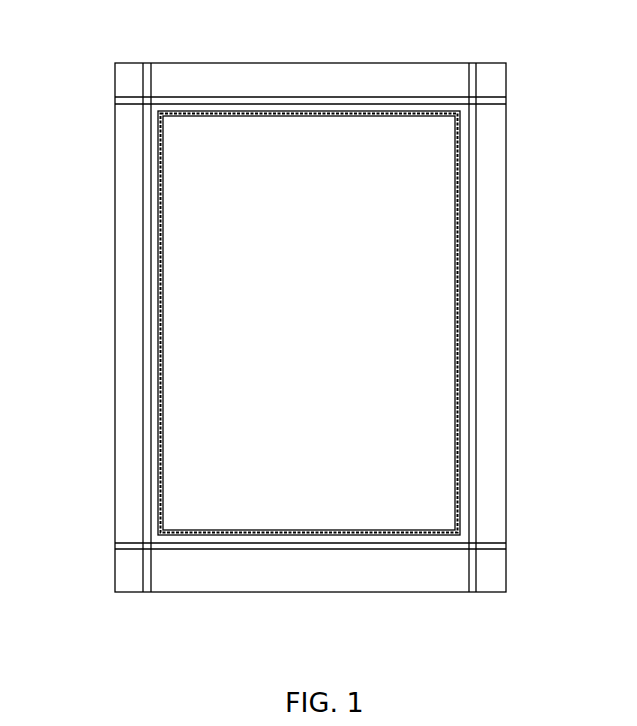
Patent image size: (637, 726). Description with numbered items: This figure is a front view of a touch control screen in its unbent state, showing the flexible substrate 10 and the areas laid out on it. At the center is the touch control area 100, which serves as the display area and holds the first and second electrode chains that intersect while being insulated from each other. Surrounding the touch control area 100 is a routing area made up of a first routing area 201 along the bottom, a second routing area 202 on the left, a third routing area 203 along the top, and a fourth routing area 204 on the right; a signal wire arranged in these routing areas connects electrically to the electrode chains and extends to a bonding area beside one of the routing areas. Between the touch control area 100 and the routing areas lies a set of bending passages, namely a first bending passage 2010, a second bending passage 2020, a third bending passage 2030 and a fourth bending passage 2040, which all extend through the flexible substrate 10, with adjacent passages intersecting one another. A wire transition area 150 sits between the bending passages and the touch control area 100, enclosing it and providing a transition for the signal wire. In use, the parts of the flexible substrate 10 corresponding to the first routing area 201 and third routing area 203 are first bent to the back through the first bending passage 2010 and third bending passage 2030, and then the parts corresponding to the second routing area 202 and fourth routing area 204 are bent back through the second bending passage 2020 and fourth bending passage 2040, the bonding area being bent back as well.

The flexible substrate 10 is at (549, 140).
The touch control area 100 is at (430, 258).
The wire transition area 150 is at (463, 342).
The first routing area 201 is at (256, 577).
The first bending passage 2010 is at (342, 547).
The second routing area 202 is at (128, 274).
The second bending passage 2020 is at (148, 332).
The third routing area 203 is at (267, 78).
The third bending passage 2030 is at (346, 100).
The fourth routing area 204 is at (495, 408).
The fourth bending passage 2040 is at (473, 467).